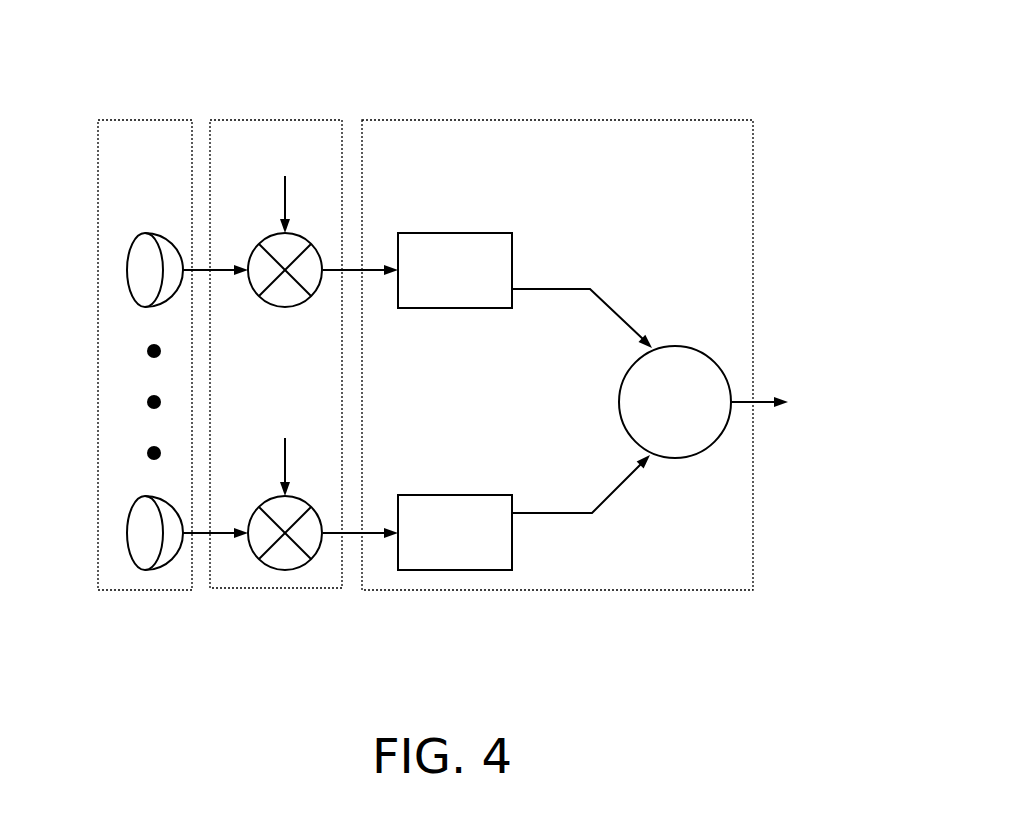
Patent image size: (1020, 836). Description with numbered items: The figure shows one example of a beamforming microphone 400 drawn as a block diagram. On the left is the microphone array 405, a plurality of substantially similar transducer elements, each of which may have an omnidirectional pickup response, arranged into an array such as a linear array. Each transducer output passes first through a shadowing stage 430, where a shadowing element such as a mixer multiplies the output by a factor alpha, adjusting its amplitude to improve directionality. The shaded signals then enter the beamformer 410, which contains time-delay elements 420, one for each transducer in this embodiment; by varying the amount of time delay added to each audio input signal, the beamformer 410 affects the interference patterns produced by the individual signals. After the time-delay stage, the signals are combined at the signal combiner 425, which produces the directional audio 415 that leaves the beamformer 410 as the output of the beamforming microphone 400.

The beamforming microphone 400 is at (118, 52).
The microphone array 405 is at (135, 400).
The beamformer 410 is at (538, 387).
The directional audio 415 is at (818, 392).
The time-delay elements 420 is at (467, 360).
The signal combiner 425 is at (675, 338).
The shadowing stage 430 is at (265, 400).